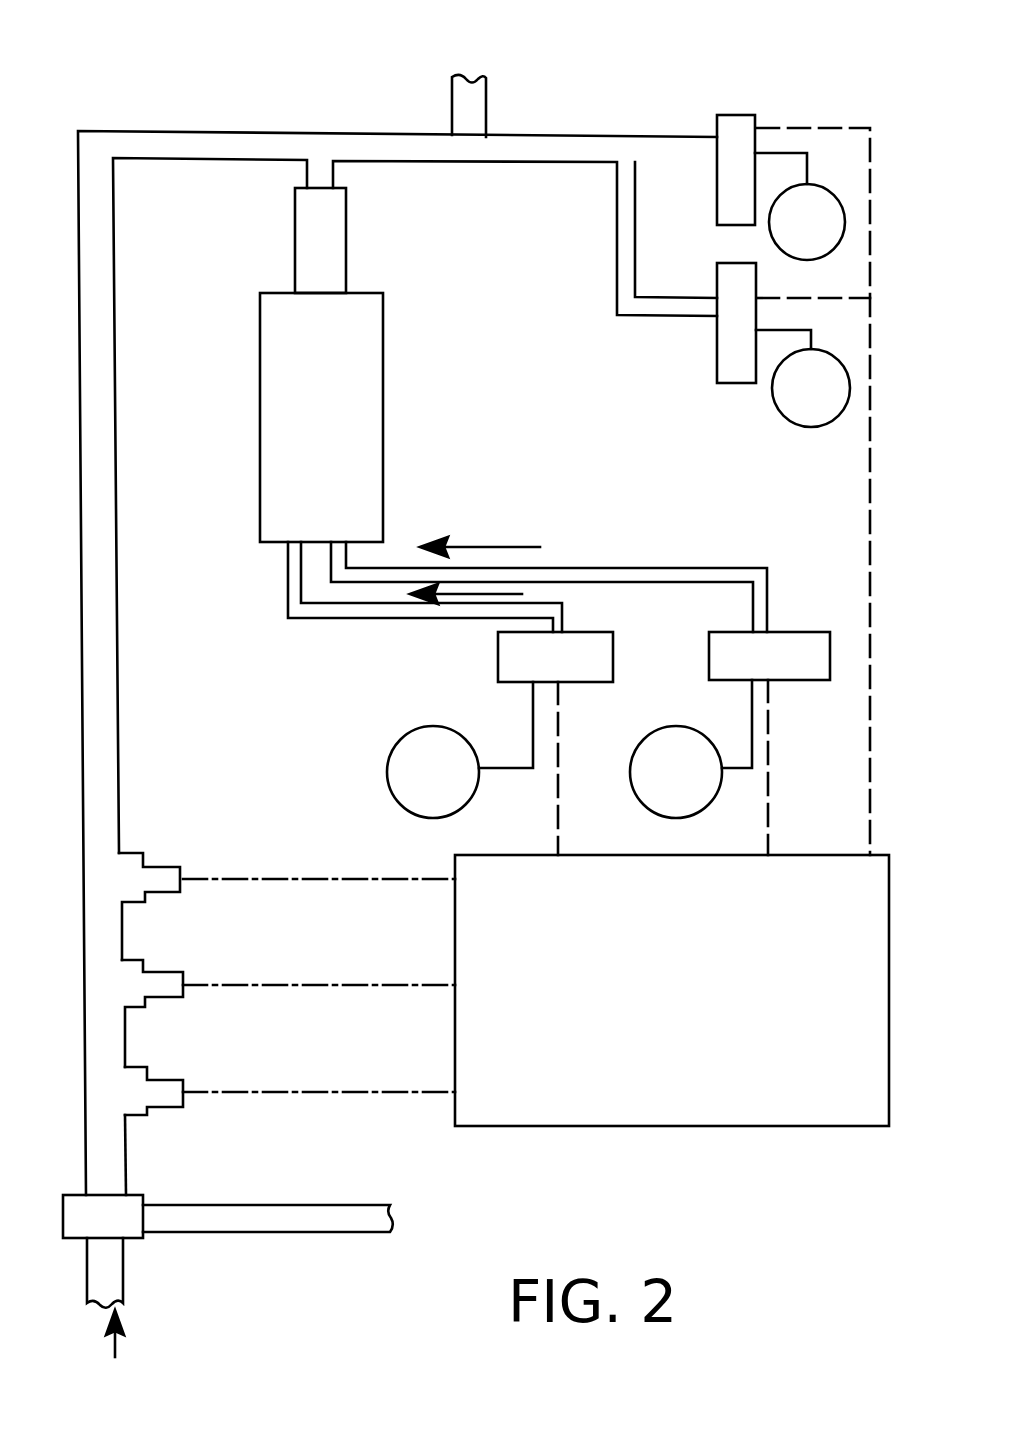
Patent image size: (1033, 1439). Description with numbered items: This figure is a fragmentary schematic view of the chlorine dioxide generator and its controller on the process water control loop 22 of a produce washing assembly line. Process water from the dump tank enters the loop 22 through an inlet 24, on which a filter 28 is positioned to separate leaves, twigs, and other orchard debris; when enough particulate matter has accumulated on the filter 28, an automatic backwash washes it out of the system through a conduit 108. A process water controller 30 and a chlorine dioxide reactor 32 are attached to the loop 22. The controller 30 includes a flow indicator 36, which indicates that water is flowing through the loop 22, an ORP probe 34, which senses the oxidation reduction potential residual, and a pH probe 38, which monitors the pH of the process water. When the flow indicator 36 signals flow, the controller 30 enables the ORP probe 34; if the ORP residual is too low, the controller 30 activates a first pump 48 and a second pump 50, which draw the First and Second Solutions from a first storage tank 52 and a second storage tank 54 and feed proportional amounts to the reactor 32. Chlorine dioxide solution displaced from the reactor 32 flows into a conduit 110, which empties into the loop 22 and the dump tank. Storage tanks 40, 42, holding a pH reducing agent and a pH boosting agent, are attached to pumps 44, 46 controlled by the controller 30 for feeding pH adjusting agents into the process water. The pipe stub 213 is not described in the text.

The conduit 110 is at (233, 130).
The pipe stub 213 is at (493, 74).
The process water control loop 22 is at (119, 765).
The chlorine dioxide reactor 32 is at (335, 445).
The pump 44 is at (713, 128).
The pump 46 is at (715, 282).
The storage tank 40 is at (815, 262).
The storage tank 42 is at (800, 428).
The first pump 48 is at (588, 632).
The second pump 50 is at (800, 632).
The first storage tank 52 is at (430, 726).
The second storage tank 54 is at (678, 710).
The process water controller 30 is at (608, 1127).
The flow indicator 36 is at (160, 867).
The pH probe 38 is at (155, 972).
The ORP probe 34 is at (160, 1080).
The filter 28 is at (135, 1195).
The conduit 108 is at (268, 1190).
The inlet 24 is at (123, 1283).